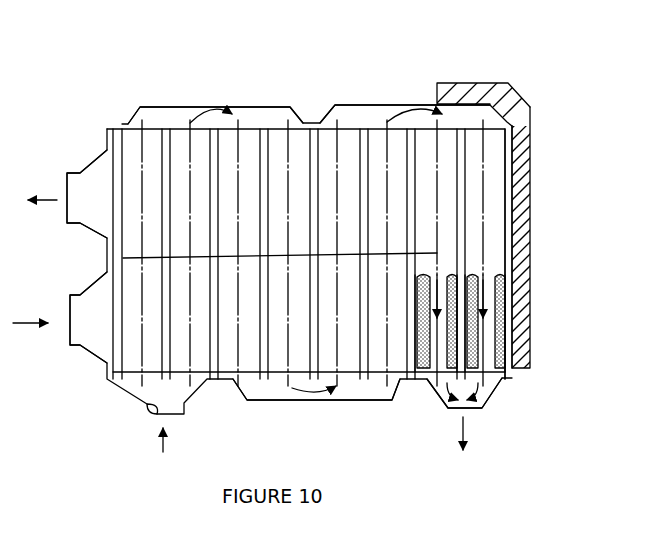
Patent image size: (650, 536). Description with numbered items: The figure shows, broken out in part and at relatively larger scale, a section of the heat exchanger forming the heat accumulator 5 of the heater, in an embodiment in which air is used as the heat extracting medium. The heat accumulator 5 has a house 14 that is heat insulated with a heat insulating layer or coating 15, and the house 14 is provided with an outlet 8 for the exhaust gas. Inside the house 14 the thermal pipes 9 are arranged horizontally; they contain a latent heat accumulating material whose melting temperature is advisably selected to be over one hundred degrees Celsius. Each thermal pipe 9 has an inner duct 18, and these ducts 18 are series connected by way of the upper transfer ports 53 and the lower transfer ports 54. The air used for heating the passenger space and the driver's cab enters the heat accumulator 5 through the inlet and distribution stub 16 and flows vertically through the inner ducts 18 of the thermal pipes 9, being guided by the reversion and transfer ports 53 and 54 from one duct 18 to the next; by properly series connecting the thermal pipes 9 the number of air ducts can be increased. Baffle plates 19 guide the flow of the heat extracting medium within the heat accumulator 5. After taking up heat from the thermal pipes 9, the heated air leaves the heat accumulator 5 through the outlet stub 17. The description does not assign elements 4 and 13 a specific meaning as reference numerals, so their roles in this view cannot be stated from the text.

The heat accumulator 5 is at (468, 73).
The outlet 8 is at (97, 170).
The upper transfer port 53 is at (167, 108).
The lower transfer port 54 is at (293, 396).
The heat insulating layer 15 is at (510, 95).
The house 14 is at (532, 152).
The thermal pipe 9 is at (485, 216).
The inner wall 4 is at (512, 283).
The duct 18 is at (492, 308).
The bed chamber 13 is at (500, 357).
The baffle plate 19 is at (123, 258).
The inlet stub 16 is at (147, 412).
The outlet stub 17 is at (448, 402).